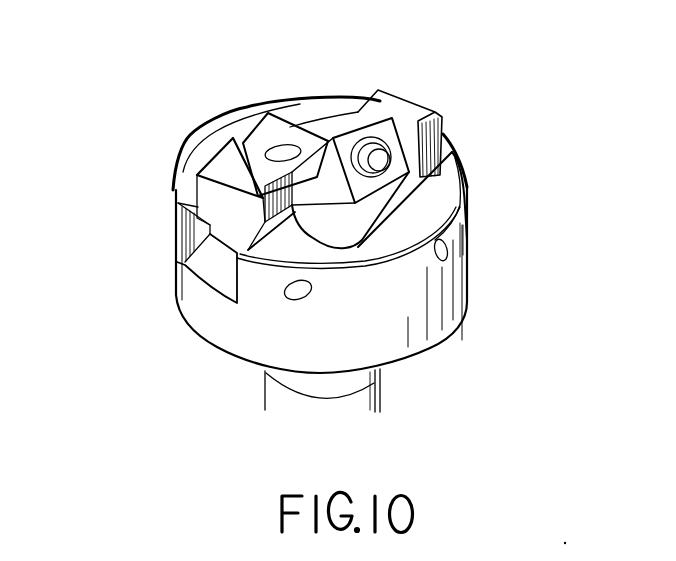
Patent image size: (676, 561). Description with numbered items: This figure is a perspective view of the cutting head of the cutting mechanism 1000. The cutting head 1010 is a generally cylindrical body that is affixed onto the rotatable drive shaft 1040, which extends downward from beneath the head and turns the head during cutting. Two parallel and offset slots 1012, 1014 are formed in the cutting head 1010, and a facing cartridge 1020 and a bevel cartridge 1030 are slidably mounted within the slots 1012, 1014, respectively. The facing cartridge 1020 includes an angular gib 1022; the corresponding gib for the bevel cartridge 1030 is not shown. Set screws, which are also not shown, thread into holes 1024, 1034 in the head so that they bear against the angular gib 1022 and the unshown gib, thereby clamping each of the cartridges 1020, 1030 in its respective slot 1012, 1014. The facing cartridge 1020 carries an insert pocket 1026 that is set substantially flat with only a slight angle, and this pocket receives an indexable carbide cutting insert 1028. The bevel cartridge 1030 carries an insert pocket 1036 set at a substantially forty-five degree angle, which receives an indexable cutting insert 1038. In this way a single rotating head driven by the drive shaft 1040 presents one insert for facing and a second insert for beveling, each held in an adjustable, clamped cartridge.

The cutting mechanism 1000 is at (160, 247).
The cutting head 1010 is at (193, 140).
The slot 1012 is at (228, 289).
The slot 1014 is at (455, 153).
The facing cartridge 1020 is at (230, 158).
The angular gib 1022 is at (183, 267).
The hole 1024 is at (173, 196).
The insert pocket 1026 is at (272, 130).
The indexable carbide cutting insert 1028 is at (305, 140).
The bevel cartridge 1030 is at (443, 113).
The hole 1034 is at (447, 252).
The insert pocket 1036 is at (410, 142).
The indexable cutting insert 1038 is at (408, 168).
The drive shaft 1040 is at (265, 404).